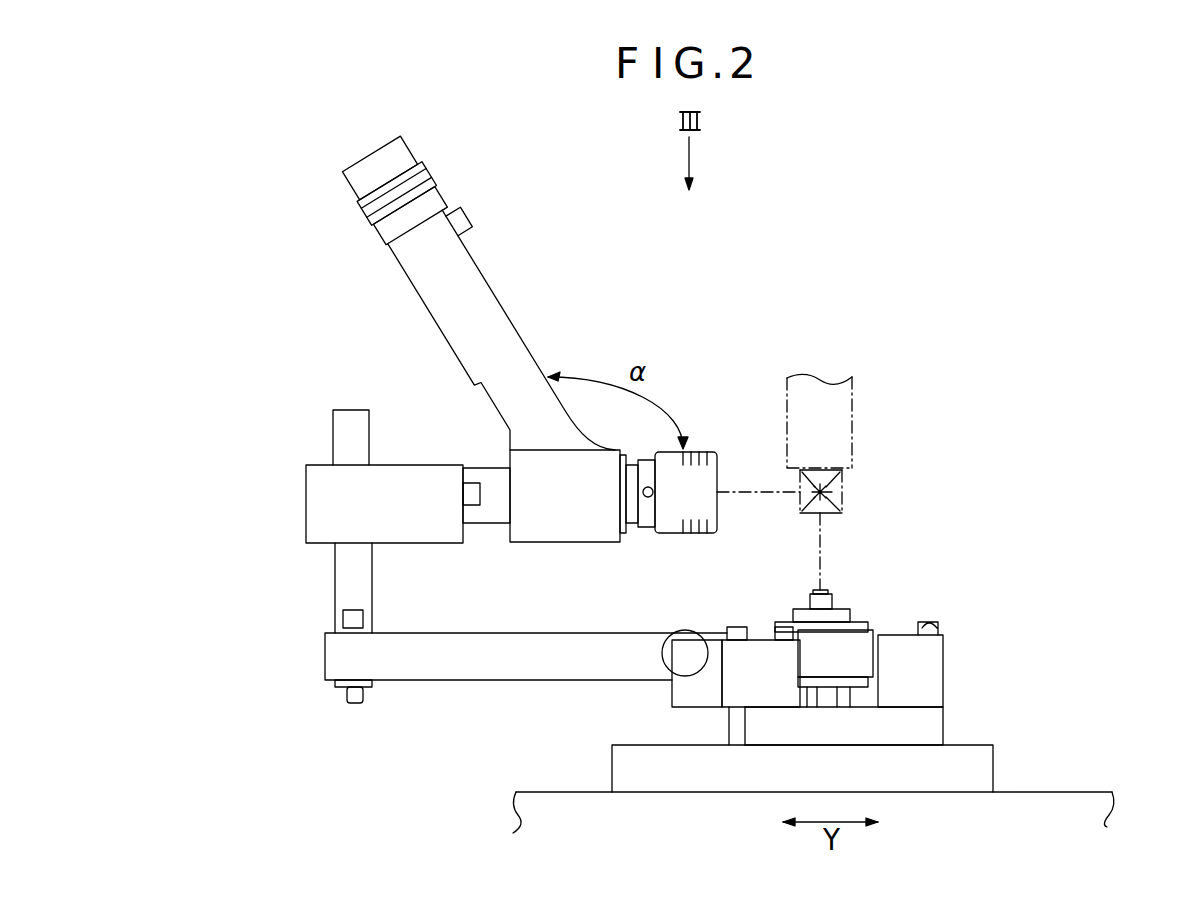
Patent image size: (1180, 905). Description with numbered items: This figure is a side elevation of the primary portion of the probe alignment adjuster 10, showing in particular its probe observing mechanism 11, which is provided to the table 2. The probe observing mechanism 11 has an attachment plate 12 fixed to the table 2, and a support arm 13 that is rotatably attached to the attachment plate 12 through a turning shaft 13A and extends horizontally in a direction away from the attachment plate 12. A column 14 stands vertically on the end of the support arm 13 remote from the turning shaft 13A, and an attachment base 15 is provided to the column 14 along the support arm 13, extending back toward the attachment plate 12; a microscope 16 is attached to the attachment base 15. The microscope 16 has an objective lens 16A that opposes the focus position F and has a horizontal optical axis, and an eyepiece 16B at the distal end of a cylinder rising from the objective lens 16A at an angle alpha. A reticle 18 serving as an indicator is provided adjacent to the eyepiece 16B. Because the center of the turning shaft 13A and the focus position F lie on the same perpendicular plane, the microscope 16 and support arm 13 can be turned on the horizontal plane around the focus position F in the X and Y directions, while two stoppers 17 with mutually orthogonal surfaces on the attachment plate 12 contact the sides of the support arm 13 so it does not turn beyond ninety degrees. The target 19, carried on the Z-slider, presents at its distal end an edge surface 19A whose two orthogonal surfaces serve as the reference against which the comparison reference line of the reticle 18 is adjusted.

The table 2 is at (980, 777).
The adjuster 10 is at (717, 298).
The probe observing mechanism 11 is at (1090, 792).
The attachment plate 12 is at (930, 728).
The support arm 13 is at (452, 667).
The turning shaft 13A is at (830, 598).
The column 14 is at (343, 427).
The attachment base 15 is at (315, 493).
The microscope 16 is at (492, 290).
The objective lens 16A is at (702, 485).
The eyepiece 16B is at (400, 153).
The stopper 17 is at (930, 674).
The reticle 18 is at (470, 222).
The target 19 is at (852, 412).
The edge surface 19A is at (838, 497).
The focus position F is at (822, 495).